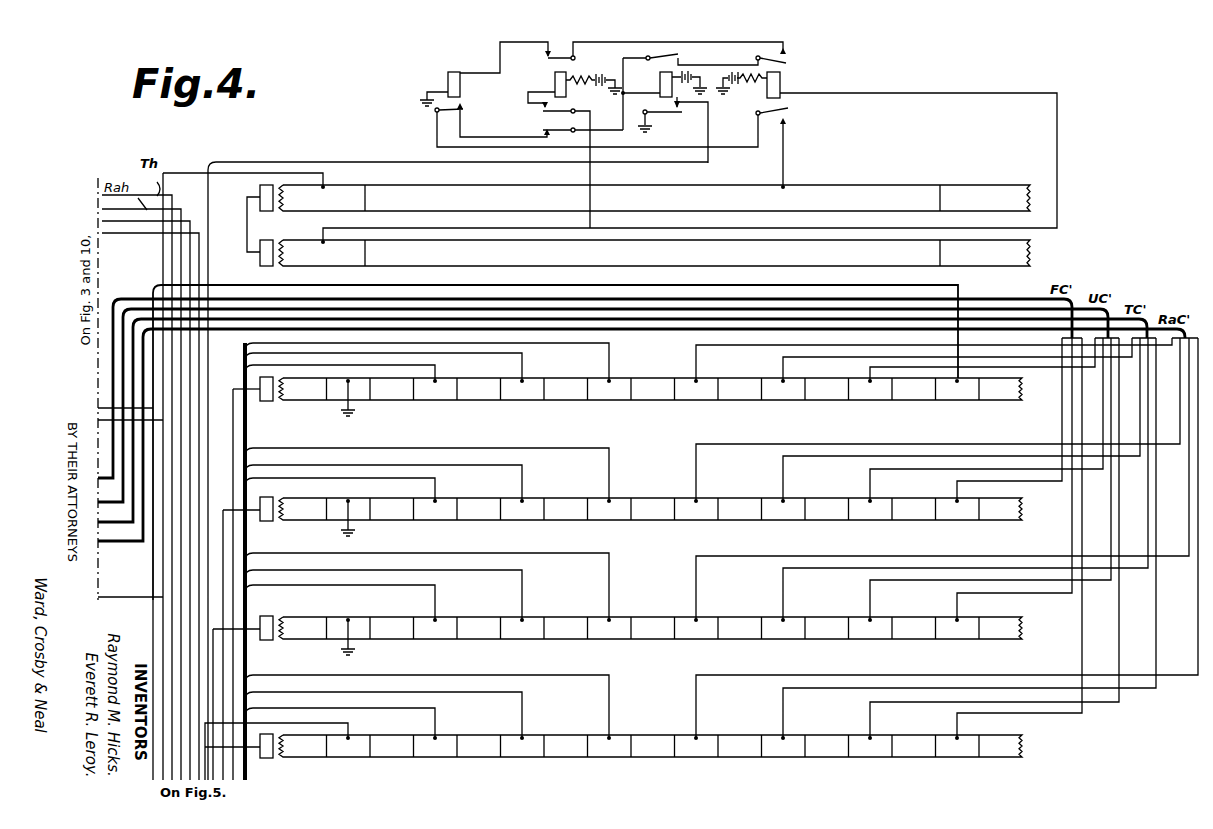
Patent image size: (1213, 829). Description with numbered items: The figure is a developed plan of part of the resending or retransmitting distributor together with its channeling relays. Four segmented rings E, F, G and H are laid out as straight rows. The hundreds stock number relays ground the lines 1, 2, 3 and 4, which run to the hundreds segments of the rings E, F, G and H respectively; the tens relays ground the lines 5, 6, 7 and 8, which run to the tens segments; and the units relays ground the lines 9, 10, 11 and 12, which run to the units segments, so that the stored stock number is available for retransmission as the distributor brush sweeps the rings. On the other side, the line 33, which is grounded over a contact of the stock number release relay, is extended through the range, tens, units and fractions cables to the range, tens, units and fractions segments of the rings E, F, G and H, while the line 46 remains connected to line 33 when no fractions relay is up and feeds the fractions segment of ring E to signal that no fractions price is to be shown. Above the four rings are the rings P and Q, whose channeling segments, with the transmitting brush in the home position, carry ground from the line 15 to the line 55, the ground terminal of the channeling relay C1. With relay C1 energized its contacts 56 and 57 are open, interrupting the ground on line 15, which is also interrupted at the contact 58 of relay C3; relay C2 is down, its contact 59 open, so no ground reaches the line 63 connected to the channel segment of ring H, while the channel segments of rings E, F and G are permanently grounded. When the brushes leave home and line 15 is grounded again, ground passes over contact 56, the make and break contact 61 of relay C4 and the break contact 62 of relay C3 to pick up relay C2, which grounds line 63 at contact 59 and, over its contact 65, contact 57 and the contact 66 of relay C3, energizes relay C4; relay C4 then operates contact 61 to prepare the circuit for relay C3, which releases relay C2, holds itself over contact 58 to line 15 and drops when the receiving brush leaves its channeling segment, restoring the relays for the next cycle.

The line 1 is at (340, 366).
The line 2 is at (340, 482).
The line 3 is at (340, 595).
The line 4 is at (340, 716).
The line 5 is at (383, 360).
The line 6 is at (383, 476).
The line 7 is at (383, 588).
The line 8 is at (383, 708).
The line 9 is at (427, 355).
The line 10 is at (427, 467).
The line 11 is at (427, 579).
The line 12 is at (427, 699).
The line 15 is at (204, 170).
The line 33 is at (151, 621).
The line 46 is at (960, 286).
The line 55 is at (1058, 212).
The contact 56 is at (790, 112).
The contact 57 is at (788, 63).
The contact 58 is at (544, 113).
The contact 59 is at (659, 116).
The make and break contact 61 is at (434, 112).
The break contact 62 is at (583, 121).
The line 63 is at (710, 129).
The contact 65 is at (668, 56).
The contact 66 is at (557, 53).
The channeling relay C1 is at (760, 85).
The channeling relay C2 is at (671, 84).
The channeling relay C3 is at (576, 83).
The channeling relay C4 is at (440, 88).
The ring P is at (630, 206).
The ring Q is at (630, 263).
The ring E is at (673, 377).
The ring F is at (673, 497).
The ring G is at (673, 616).
The ring H is at (673, 734).